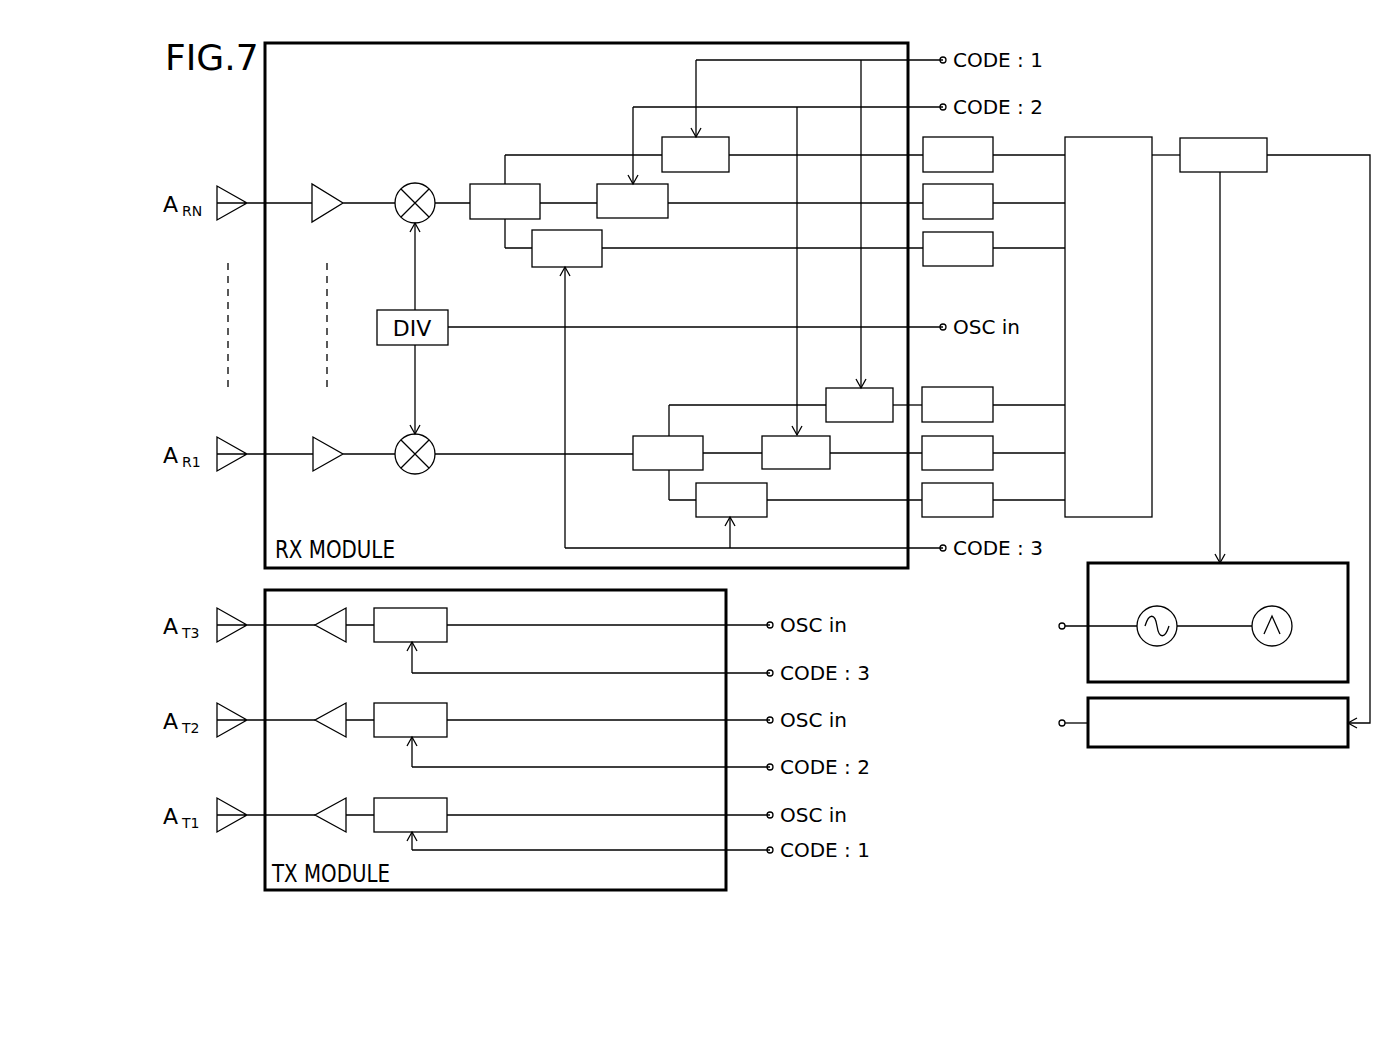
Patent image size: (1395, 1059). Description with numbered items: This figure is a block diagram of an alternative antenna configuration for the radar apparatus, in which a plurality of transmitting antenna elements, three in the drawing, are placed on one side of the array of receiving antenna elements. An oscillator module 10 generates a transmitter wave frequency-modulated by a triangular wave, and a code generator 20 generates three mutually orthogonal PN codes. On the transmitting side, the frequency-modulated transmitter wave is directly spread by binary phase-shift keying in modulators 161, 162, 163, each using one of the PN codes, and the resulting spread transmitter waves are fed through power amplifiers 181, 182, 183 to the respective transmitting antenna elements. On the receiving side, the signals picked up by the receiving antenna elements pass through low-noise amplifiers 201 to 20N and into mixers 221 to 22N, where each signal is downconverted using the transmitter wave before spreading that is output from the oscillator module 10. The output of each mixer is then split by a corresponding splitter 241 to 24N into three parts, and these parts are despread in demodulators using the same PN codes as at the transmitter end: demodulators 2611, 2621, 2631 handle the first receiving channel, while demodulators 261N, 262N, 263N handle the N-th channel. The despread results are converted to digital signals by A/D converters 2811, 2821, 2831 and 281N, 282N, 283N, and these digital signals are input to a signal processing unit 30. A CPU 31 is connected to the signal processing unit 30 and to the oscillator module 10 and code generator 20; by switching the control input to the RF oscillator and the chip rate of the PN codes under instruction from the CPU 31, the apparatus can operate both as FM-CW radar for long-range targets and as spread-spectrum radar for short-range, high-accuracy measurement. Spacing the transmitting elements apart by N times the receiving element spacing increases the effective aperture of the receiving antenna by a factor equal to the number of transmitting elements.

The oscillator module 10 is at (1283, 563).
The code generator 20 is at (1292, 747).
The signal processing unit 30 is at (1115, 137).
The CPU 31 is at (1238, 138).
The low-noise amplifier 20N is at (328, 184).
The low-noise amplifier 201 is at (343, 441).
The mixer 22N is at (415, 183).
The mixer 221 is at (429, 441).
The splitter 24N is at (492, 220).
The splitter 241 is at (645, 470).
The demodulator 263N is at (729, 147).
The demodulator 262N is at (668, 210).
The demodulator 261N is at (602, 258).
The demodulator 2631 is at (843, 388).
The demodulator 2621 is at (830, 461).
The demodulator 2611 is at (767, 507).
The A/D converter 283N is at (993, 163).
The A/D converter 282N is at (993, 211).
The A/D converter 281N is at (993, 258).
The A/D converter 2831 is at (990, 393).
The A/D converter 2821 is at (993, 442).
The A/D converter 2811 is at (993, 490).
The power amplifier 183 is at (330, 642).
The power amplifier 182 is at (333, 712).
The power amplifier 181 is at (333, 806).
The modulator 163 is at (440, 642).
The modulator 162 is at (447, 710).
The modulator 161 is at (447, 805).